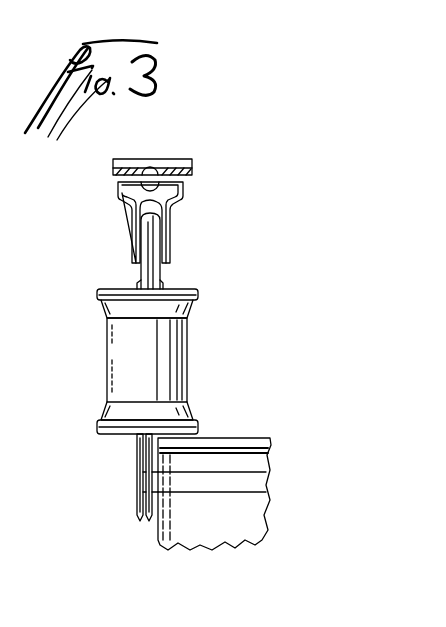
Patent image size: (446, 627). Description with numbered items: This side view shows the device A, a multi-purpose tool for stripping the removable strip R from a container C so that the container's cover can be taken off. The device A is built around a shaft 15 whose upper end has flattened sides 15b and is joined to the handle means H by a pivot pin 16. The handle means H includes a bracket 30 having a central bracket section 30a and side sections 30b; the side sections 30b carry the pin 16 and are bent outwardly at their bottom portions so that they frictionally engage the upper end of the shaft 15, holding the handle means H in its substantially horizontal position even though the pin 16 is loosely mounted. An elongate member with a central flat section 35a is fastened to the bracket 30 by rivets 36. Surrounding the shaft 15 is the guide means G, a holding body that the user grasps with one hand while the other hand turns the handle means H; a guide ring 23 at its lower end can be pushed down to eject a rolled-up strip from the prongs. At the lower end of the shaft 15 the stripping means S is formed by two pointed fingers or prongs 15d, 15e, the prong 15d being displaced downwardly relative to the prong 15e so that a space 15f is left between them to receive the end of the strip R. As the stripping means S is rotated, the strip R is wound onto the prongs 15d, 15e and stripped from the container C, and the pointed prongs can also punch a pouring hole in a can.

The central flat section 35a is at (120, 177).
The rivets 36 is at (152, 173).
The device A is at (207, 158).
The central bracket section 30a is at (120, 192).
The handle means H is at (184, 191).
The bracket 30 is at (132, 208).
The side sections 30b is at (132, 238).
The pivot pin 16 is at (140, 251).
The shaft 15 is at (161, 283).
The flattened sides 15b is at (140, 268).
The guide means G is at (188, 361).
The guide ring 23 is at (97, 425).
The stripping means S is at (140, 438).
The left-hand finger or prong 15e is at (137, 494).
The space 15f is at (140, 520).
The right-hand finger or prong 15d is at (150, 503).
The container C is at (245, 533).
The removable strip R is at (250, 483).